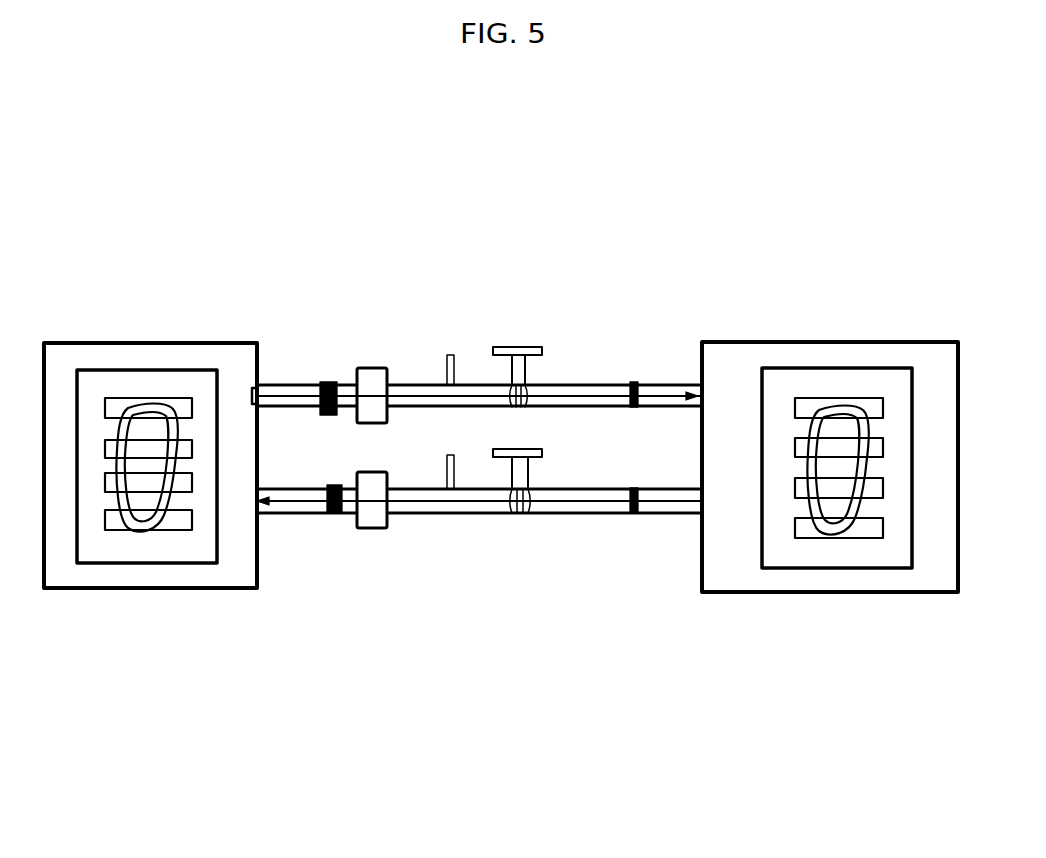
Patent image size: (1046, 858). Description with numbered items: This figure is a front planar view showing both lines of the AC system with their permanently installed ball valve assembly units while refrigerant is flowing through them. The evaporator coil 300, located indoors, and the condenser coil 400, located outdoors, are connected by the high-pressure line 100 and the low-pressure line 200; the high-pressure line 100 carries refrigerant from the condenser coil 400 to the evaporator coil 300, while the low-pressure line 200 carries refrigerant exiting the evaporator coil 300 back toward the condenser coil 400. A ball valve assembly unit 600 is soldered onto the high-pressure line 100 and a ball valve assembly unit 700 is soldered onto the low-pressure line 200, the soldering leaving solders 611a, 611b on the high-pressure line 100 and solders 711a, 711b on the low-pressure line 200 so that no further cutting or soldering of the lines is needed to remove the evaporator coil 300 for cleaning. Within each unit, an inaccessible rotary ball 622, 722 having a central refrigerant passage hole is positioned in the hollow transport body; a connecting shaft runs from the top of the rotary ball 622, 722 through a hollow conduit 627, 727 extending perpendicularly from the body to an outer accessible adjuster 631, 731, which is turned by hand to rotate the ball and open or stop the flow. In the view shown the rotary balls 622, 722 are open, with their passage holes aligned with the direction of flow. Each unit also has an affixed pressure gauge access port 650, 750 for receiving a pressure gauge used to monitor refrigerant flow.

The high-pressure line 100 is at (304, 559).
The low-pressure line 200 is at (302, 316).
The evaporator coil 300 is at (151, 552).
The condenser coil 400 is at (838, 559).
The ball valve assembly unit 600 is at (633, 518).
The solder 611a is at (333, 527).
The solder 611b is at (641, 527).
The rotary ball 622 is at (531, 526).
The hollow conduit 627 is at (517, 488).
The accessible adjuster 631 is at (549, 472).
The pressure gauge access port 650 is at (440, 487).
The ball valve assembly unit 700 is at (342, 380).
The solder 711a is at (335, 367).
The solder 711b is at (640, 377).
The rotary ball 722 is at (638, 370).
The hollow conduit 727 is at (511, 317).
The accessible adjuster 731 is at (552, 330).
The pressure gauge access port 750 is at (454, 339).